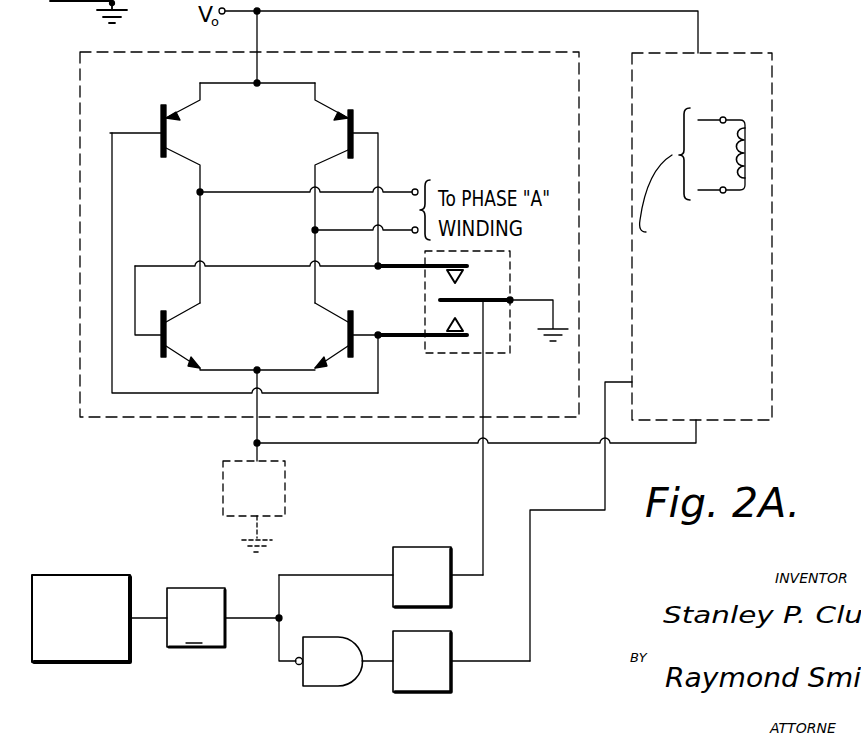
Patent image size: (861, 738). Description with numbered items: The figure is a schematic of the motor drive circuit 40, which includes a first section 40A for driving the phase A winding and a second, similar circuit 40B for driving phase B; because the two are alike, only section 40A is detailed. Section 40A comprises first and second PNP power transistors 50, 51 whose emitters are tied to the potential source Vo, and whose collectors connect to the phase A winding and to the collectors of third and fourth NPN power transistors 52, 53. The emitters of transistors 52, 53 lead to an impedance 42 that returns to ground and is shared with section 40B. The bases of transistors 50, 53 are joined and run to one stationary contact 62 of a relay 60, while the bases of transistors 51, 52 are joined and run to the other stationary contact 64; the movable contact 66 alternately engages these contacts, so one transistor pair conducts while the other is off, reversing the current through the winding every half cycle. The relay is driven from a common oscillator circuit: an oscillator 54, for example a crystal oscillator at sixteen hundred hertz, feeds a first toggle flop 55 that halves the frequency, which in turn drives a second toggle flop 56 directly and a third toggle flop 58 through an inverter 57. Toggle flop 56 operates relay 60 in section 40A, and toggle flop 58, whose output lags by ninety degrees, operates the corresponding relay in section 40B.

The motor drive circuit 40 is at (462, 40).
The first section 40A is at (81, 129).
The second circuit 40B is at (772, 101).
The impedance 42 is at (222, 489).
The first PNP power transistor 50 is at (208, 146).
The second PNP power transistor 51 is at (330, 146).
The third NPN power transistor 52 is at (206, 351).
The fourth NPN power transistor 53 is at (330, 351).
The oscillator 54 is at (83, 575).
The first toggle flop 55 is at (190, 647).
The second toggle flop 56 is at (423, 547).
The inverter 57 is at (332, 686).
The third toggle flop 58 is at (455, 681).
The relay 60 is at (497, 353).
The stationary contact 62 is at (441, 337).
The stationary contact 64 is at (433, 269).
The movable contact 66 is at (472, 300).